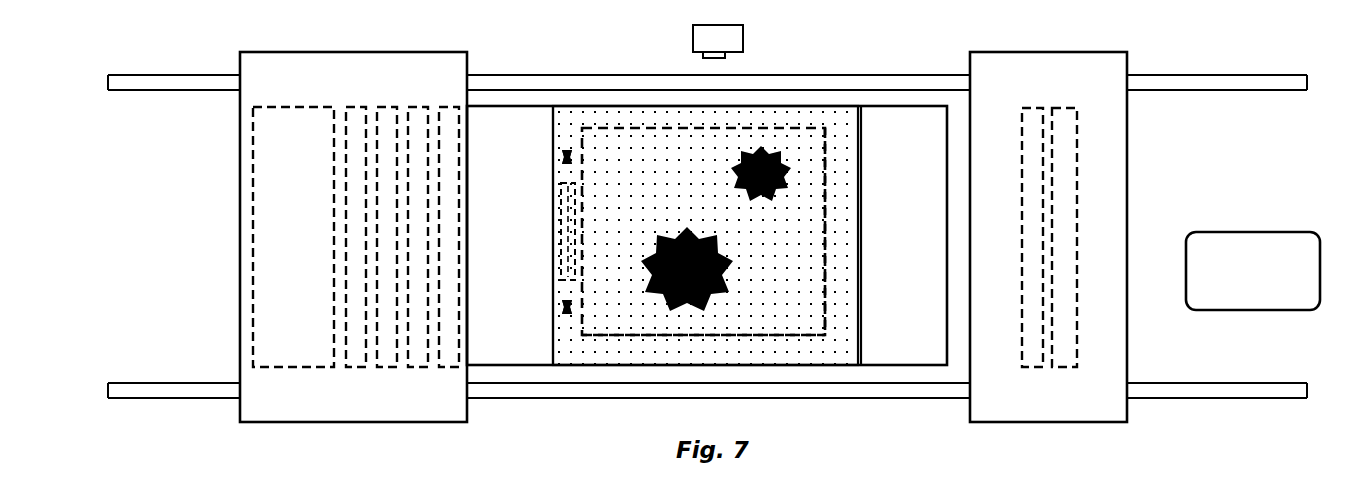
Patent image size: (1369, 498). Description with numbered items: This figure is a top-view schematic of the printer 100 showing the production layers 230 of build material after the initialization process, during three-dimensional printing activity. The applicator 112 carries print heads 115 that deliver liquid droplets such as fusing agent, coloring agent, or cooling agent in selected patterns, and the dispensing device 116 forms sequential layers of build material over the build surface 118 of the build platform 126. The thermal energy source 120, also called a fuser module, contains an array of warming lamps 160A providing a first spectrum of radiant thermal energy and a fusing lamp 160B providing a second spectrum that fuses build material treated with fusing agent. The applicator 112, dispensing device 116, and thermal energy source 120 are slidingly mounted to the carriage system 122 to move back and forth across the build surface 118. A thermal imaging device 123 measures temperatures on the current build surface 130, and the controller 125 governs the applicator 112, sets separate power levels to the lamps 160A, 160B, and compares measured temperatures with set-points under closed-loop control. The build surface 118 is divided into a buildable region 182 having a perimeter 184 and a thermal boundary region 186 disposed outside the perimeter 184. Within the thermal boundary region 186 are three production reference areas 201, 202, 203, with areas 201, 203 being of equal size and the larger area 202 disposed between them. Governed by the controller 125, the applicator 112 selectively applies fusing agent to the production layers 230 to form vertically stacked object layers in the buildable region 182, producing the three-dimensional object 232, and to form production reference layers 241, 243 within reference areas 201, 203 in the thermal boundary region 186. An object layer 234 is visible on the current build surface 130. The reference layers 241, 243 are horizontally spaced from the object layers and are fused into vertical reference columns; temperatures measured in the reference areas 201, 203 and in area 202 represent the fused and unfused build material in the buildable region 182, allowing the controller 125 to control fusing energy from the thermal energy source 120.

The printer 100 is at (128, 68).
The applicator 112 is at (1035, 56).
The print heads 115 is at (1027, 370).
The dispensing device 116 is at (283, 369).
The build surface 118 is at (835, 106).
The thermal energy source 120 is at (282, 54).
The carriage system 122 is at (162, 74).
The thermal imaging device 123 is at (700, 46).
The controller 125 is at (1234, 231).
The build platform 126 is at (774, 106).
The current build surface 130 is at (625, 156).
The warming lamps 160A is at (441, 369).
The fusing lamp 160B is at (349, 369).
The buildable region 182 is at (812, 156).
The perimeter 184 is at (828, 183).
The thermal boundary region 186 is at (563, 335).
The production reference area 201 is at (562, 154).
The production reference area 202 is at (562, 212).
The production reference area 203 is at (562, 305).
The production layers 230 is at (583, 118).
The 3D object 232 is at (683, 316).
The object layer 234 is at (707, 310).
The production reference layer 241 is at (524, 165).
The production reference layer 243 is at (527, 312).